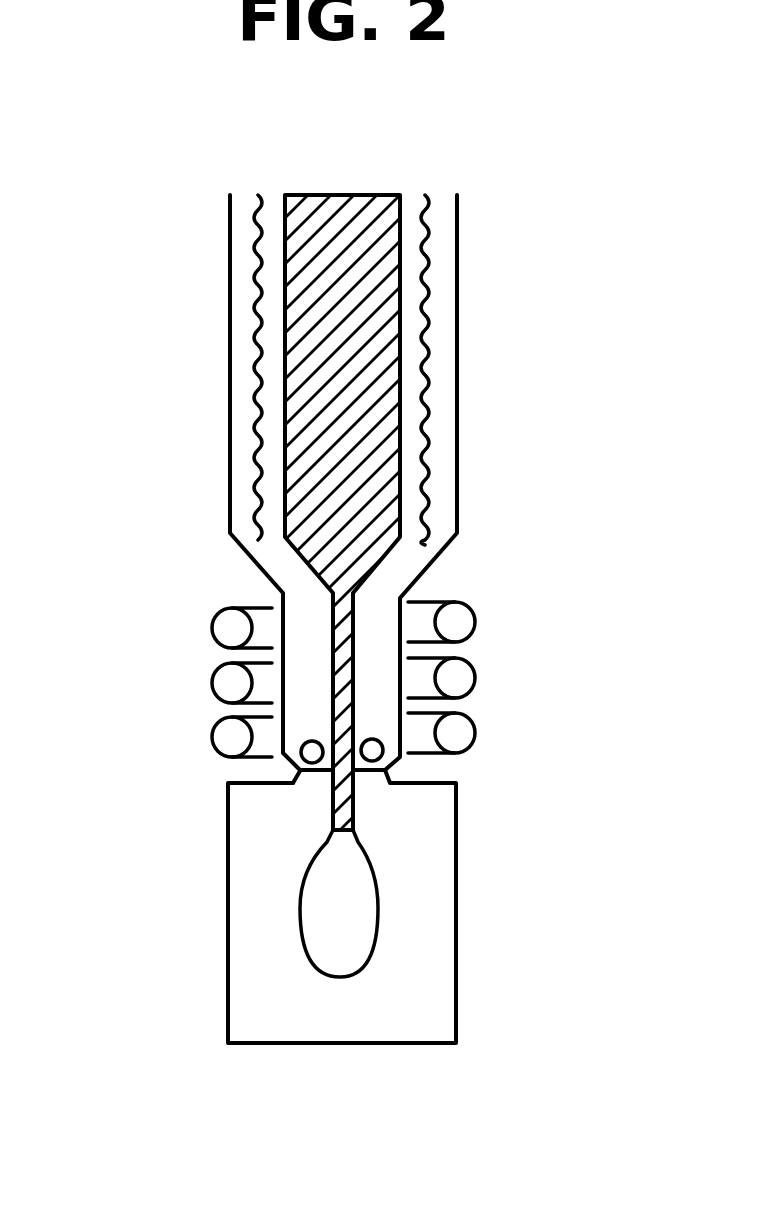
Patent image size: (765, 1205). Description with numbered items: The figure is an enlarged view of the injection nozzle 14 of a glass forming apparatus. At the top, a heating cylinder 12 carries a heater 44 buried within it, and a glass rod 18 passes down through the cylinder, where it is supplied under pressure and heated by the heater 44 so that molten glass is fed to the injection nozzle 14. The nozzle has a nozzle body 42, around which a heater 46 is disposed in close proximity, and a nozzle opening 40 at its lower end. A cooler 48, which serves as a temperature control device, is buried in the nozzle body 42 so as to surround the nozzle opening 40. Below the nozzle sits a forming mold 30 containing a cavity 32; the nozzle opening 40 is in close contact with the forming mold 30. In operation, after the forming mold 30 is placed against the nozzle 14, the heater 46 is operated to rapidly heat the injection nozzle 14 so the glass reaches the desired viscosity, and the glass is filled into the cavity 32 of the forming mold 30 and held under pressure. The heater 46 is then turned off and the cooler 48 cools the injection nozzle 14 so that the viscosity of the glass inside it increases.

The heating cylinder 12 is at (460, 347).
The injection nozzle 14 is at (186, 590).
The glass rod 18 is at (382, 288).
The forming mold 30 is at (433, 977).
The cavity 32 is at (343, 953).
The nozzle opening 40 is at (330, 772).
The nozzle body 42 is at (300, 655).
The heater 44 is at (426, 440).
The heater 46 is at (460, 732).
The cooler 48 is at (373, 750).